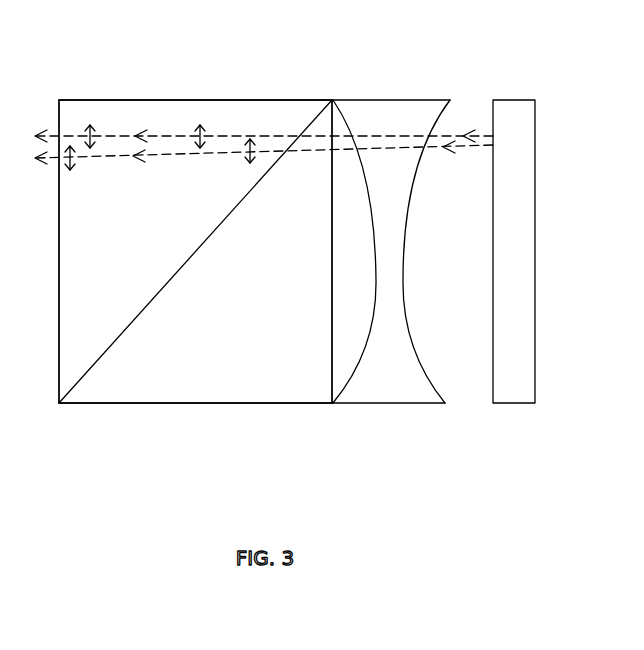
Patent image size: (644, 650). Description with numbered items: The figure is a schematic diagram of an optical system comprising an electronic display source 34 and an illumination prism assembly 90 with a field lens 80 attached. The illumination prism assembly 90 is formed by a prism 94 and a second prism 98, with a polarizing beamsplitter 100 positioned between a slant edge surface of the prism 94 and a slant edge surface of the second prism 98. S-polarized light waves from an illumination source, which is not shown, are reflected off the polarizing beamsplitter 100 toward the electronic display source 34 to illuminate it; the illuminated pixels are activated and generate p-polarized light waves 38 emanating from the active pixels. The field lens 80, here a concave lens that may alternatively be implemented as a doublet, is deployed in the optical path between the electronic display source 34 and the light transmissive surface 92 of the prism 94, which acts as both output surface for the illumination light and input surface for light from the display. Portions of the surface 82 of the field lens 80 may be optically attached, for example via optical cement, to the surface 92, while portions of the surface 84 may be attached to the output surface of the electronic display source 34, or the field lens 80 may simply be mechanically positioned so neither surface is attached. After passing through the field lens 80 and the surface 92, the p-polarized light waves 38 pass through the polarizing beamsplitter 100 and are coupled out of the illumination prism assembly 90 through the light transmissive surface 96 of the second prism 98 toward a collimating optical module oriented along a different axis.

The electronic display source 34 is at (535, 158).
The p-polarized light waves 38 is at (455, 138).
The field lens 80 is at (412, 240).
The surface of the field lens 82 is at (360, 372).
The surface of the field lens 84 is at (423, 372).
The illumination prism assembly 90 is at (145, 432).
The light transmissive surface 92 is at (332, 303).
The prism 94 is at (205, 373).
The light transmissive surface 96 is at (60, 248).
The second prism 98 is at (110, 110).
The polarizing beamsplitter 100 is at (227, 216).